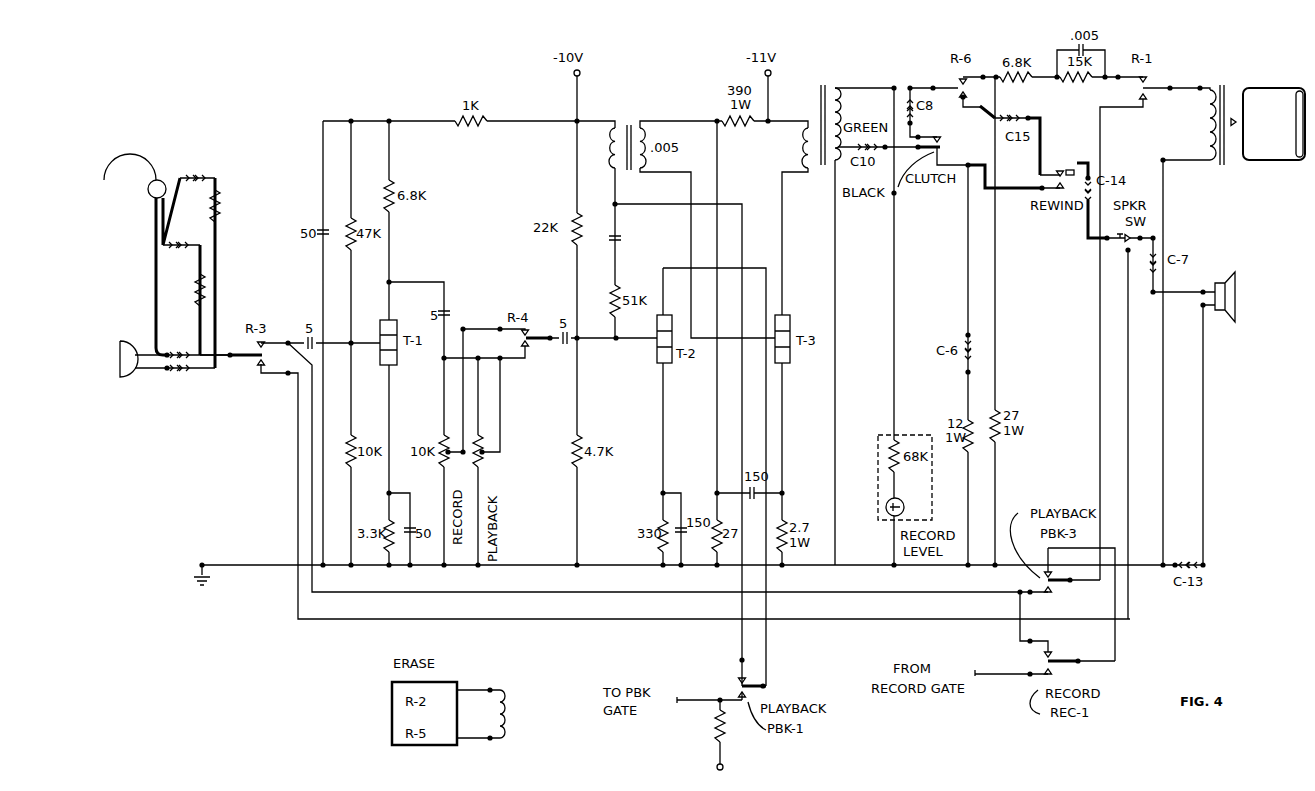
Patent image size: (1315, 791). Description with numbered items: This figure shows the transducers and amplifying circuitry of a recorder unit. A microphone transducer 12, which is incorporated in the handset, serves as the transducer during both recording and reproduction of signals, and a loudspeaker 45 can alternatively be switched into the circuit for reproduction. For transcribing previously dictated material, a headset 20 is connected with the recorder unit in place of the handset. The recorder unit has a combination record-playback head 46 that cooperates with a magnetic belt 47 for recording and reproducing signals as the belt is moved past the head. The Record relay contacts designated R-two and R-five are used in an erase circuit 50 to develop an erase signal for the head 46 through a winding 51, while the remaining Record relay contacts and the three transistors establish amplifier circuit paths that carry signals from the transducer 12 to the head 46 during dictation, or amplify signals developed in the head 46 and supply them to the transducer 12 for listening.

The microphone transducer 12 is at (128, 378).
The headset 20 is at (142, 162).
The loudspeaker 45 is at (1238, 297).
The record-playback head 46 is at (1186, 163).
The magnetic belt 47 is at (1250, 163).
The erase circuit 50 is at (484, 689).
The winding 51 is at (512, 718).